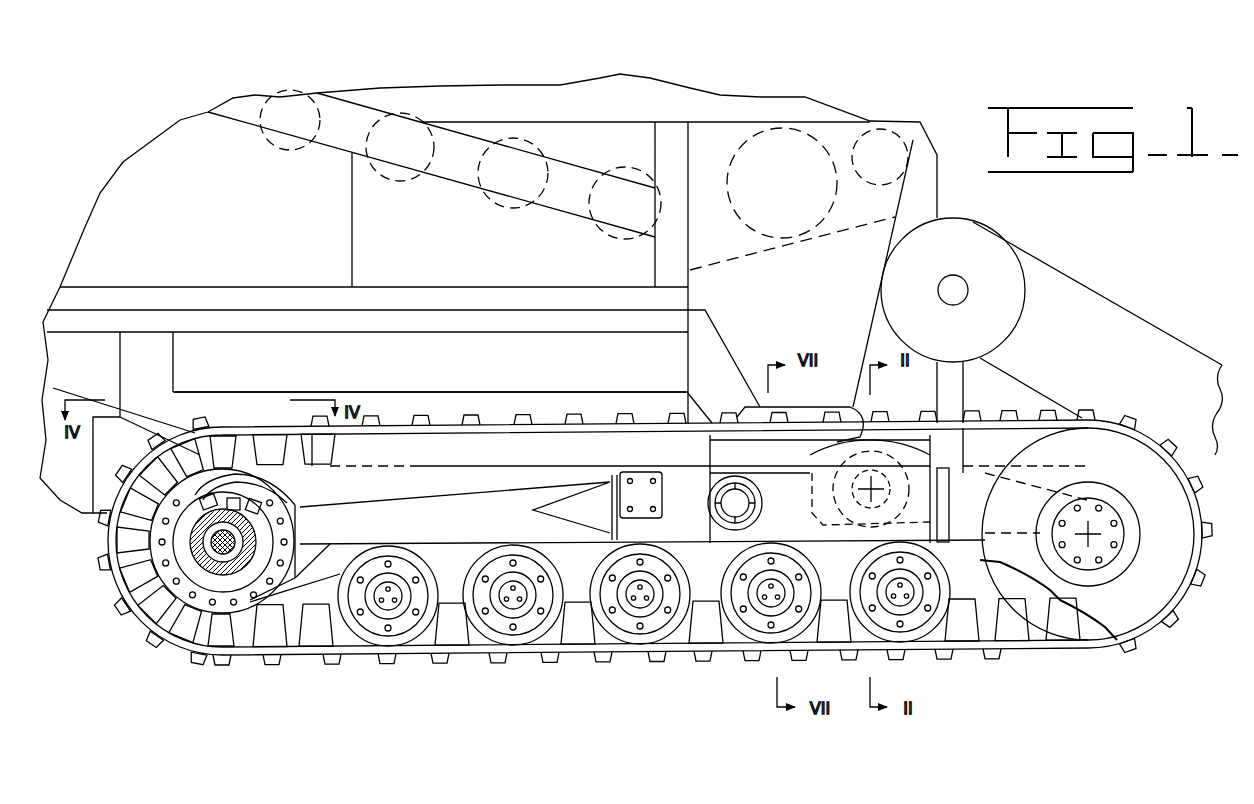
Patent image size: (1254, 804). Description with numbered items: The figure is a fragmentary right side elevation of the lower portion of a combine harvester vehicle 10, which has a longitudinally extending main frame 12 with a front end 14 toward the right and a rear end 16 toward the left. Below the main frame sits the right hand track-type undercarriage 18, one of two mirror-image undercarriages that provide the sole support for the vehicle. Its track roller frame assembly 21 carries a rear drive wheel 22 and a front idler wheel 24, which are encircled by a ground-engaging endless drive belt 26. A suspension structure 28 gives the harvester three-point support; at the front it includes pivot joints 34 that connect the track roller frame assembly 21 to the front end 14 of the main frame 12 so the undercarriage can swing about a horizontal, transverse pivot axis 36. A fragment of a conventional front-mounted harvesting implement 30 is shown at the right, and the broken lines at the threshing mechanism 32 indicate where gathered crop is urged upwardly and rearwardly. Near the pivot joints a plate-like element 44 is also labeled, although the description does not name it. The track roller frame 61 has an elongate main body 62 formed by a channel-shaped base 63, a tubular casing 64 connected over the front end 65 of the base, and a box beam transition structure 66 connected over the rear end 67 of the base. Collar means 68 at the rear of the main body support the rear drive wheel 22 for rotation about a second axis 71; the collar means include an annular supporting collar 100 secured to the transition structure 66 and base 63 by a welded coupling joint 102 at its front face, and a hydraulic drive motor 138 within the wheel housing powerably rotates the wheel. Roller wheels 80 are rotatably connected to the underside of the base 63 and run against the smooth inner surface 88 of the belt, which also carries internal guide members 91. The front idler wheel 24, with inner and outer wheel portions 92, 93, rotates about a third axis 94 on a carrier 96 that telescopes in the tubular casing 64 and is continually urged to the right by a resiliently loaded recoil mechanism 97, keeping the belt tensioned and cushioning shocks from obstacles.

The combine harvester vehicle 10 is at (235, 96).
The main frame 12 is at (940, 387).
The front end 14 is at (935, 410).
The rear end 16 is at (198, 400).
The right hand track-type undercarriage 18 is at (548, 416).
The track roller frame assembly 21 is at (497, 478).
The rear drive wheel 22 is at (320, 482).
The front idler wheel 24 is at (1125, 462).
The drive belt 26 is at (390, 416).
The suspension structure 28 is at (940, 452).
The front-mounted harvesting implement 30 is at (1093, 286).
The threshing mechanism 32 is at (593, 230).
The pivot joints 34 is at (843, 502).
The pivot axis 36 is at (870, 495).
The cover plate 44 is at (830, 440).
The track roller frame 61 is at (670, 470).
The elongate main body 62 is at (470, 495).
The channel-shaped base 63 is at (557, 568).
The tubular casing 64 is at (682, 557).
The front end of the base 65 is at (920, 567).
The box beam transition structure 66 is at (435, 534).
The rear end of the base 67 is at (428, 562).
The collar means 68 is at (302, 524).
The second axis 71 is at (222, 545).
The roller wheels 80 is at (650, 621).
The smooth inner surface 88 is at (460, 640).
The guide members 91 is at (1010, 640).
The inner wheel portion 92 is at (1007, 591).
The outer wheel portion 93 is at (999, 521).
The third axis 94 is at (1093, 537).
The carrier 96 is at (985, 480).
The recoil mechanism 97 is at (680, 563).
The annular supporting collar 100 is at (248, 596).
The welded coupling joint 102 is at (300, 560).
The hydraulic drive motor 138 is at (202, 578).